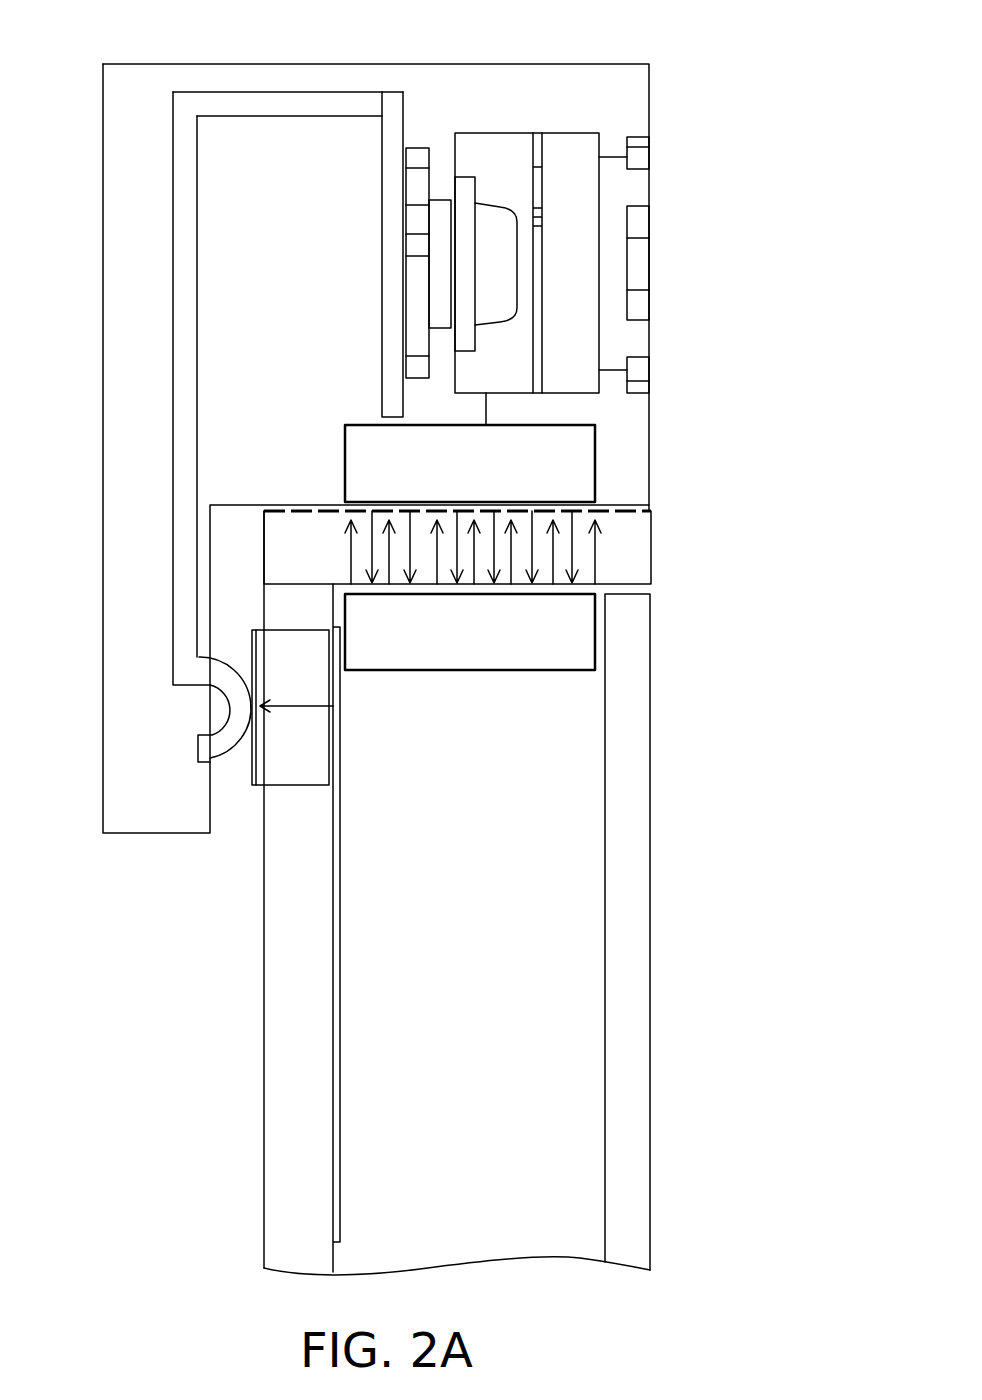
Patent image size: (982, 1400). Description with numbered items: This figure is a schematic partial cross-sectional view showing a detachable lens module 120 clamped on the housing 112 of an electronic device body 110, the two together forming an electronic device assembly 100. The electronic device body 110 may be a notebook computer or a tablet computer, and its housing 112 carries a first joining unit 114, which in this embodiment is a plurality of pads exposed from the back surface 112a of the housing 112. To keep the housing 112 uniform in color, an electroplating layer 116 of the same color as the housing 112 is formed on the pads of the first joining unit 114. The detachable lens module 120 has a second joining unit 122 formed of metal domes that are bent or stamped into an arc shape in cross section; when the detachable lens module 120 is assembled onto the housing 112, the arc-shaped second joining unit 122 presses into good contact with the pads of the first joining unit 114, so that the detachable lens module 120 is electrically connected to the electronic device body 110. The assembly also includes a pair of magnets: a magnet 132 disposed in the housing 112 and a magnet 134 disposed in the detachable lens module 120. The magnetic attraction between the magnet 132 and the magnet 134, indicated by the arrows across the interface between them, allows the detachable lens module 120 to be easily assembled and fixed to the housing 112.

The electronic device assembly 100 is at (794, 0).
The electronic device body 110 is at (377, 1077).
The housing 112 is at (403, 893).
The surface 112a is at (256, 1002).
The first joining unit 114 is at (302, 777).
The electroplating layer 116 is at (255, 763).
The detachable lens module 120 is at (112, 252).
The second joining unit 122 is at (205, 747).
The magnet 132 is at (573, 625).
The magnet 134 is at (573, 463).